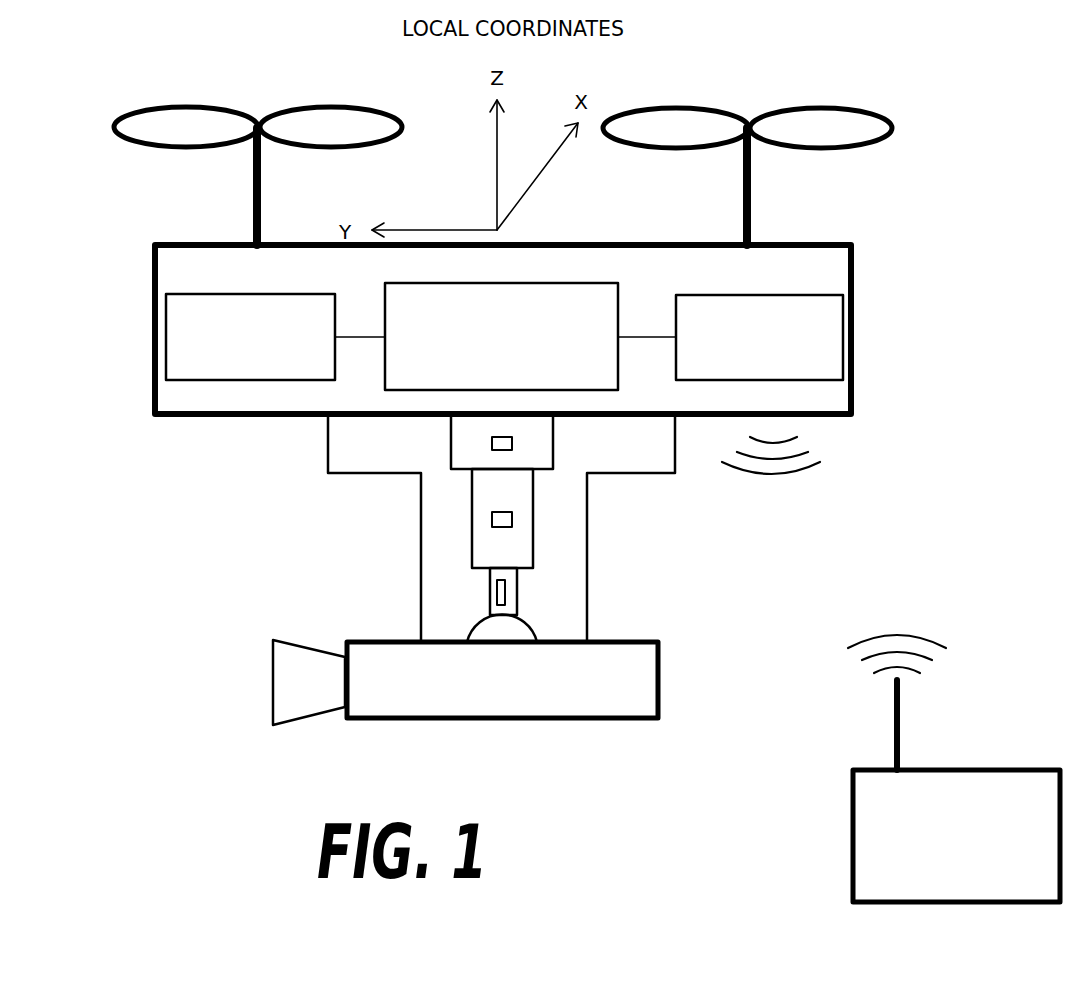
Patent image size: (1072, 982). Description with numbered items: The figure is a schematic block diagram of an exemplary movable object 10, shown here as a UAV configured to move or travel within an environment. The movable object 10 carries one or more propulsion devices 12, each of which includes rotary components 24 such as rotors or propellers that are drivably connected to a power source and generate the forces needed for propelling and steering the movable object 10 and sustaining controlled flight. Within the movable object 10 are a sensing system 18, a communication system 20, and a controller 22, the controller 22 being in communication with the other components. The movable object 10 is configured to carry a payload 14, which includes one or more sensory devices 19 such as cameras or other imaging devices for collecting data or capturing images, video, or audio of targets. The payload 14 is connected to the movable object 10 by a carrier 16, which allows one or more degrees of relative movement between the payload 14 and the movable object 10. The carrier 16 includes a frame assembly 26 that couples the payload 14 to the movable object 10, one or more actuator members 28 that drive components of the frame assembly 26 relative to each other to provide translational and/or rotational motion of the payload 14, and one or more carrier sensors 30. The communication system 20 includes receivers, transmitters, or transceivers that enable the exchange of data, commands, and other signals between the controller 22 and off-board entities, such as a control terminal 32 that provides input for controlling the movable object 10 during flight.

The movable object 10 is at (856, 244).
The propulsion device 12 is at (124, 168).
The payload 14 is at (258, 690).
The carrier 16 is at (632, 542).
The sensing system 18 is at (250, 337).
The sensory device 19 is at (502, 680).
The communication system 20 is at (759, 337).
The controller 22 is at (501, 336).
The rotary component 24 is at (221, 107).
The frame assembly 26 is at (328, 474).
The actuator member 28 is at (450, 443).
The carrier sensor 30 is at (501, 443).
The control terminal 32 is at (954, 768).